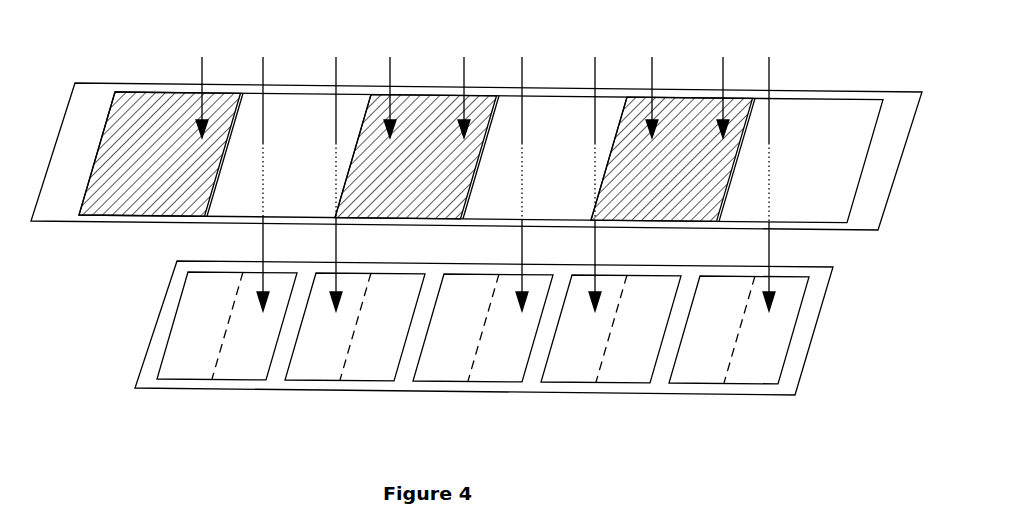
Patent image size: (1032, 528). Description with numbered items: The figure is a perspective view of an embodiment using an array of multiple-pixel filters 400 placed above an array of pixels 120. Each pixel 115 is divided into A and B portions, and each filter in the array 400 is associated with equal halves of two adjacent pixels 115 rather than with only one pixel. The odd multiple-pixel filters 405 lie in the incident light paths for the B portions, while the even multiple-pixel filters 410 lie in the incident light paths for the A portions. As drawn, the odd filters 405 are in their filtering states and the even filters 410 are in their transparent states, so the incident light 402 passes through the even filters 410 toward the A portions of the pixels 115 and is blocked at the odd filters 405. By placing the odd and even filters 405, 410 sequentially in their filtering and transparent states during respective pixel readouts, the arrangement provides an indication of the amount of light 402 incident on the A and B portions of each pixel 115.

The array of multiple-pixel filters 400 is at (860, 239).
The incident light path 402 is at (192, 59).
The odd multiple-pixel filters 405 is at (145, 216).
The even multiple-pixel filters 410 is at (287, 218).
The array of pixels 120 is at (827, 340).
The pixels 115 is at (212, 380).